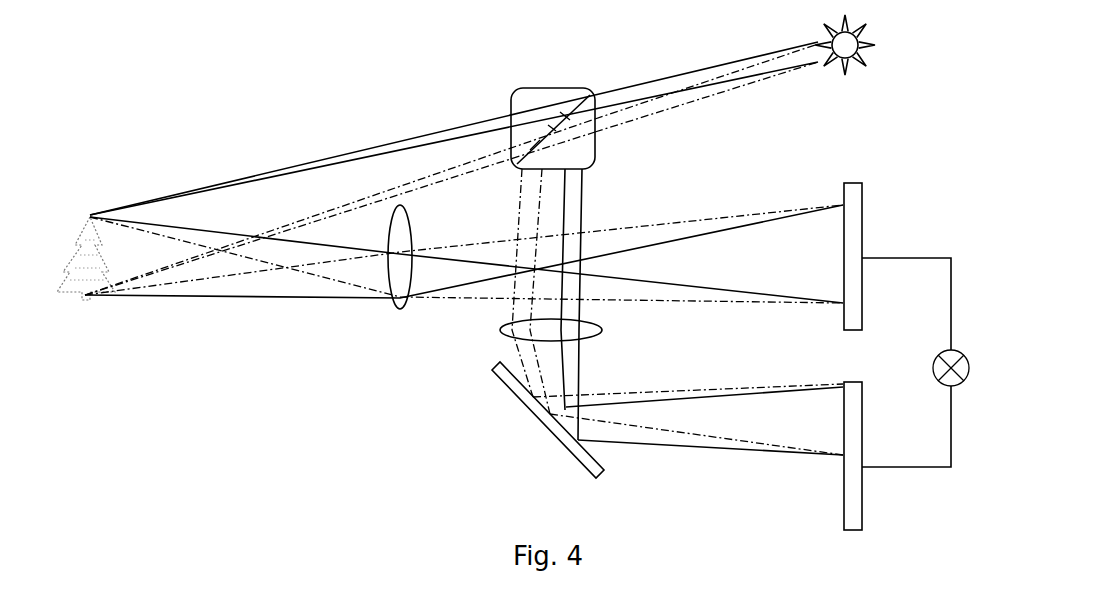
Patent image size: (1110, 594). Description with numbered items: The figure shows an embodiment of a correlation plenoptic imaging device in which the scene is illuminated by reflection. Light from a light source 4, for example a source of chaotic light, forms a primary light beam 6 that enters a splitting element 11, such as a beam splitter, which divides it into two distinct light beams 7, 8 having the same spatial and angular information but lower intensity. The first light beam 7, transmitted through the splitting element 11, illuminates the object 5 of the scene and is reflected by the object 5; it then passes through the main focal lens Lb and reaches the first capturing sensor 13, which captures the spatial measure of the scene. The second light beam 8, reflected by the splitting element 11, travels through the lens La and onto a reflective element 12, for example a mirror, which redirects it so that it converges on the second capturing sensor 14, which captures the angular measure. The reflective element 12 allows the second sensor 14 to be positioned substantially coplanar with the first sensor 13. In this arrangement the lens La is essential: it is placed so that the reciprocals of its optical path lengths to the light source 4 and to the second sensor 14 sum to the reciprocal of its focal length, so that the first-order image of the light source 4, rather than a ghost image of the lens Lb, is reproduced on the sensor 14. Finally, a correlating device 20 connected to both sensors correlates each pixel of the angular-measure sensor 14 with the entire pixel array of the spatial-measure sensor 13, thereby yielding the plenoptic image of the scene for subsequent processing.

The light source 4 is at (861, 45).
The object 5 is at (86, 229).
The primary light beam 6 is at (706, 80).
The first light beam 7 is at (464, 220).
The second light beam 8 is at (563, 304).
The splitting element 11 is at (553, 106).
The reflective element 12 is at (661, 420).
The first capturing sensor 13 is at (883, 256).
The second capturing sensor 14 is at (882, 456).
The correlating device 20 is at (915, 362).
The lens La is at (575, 334).
The main focal lens Lb is at (398, 279).